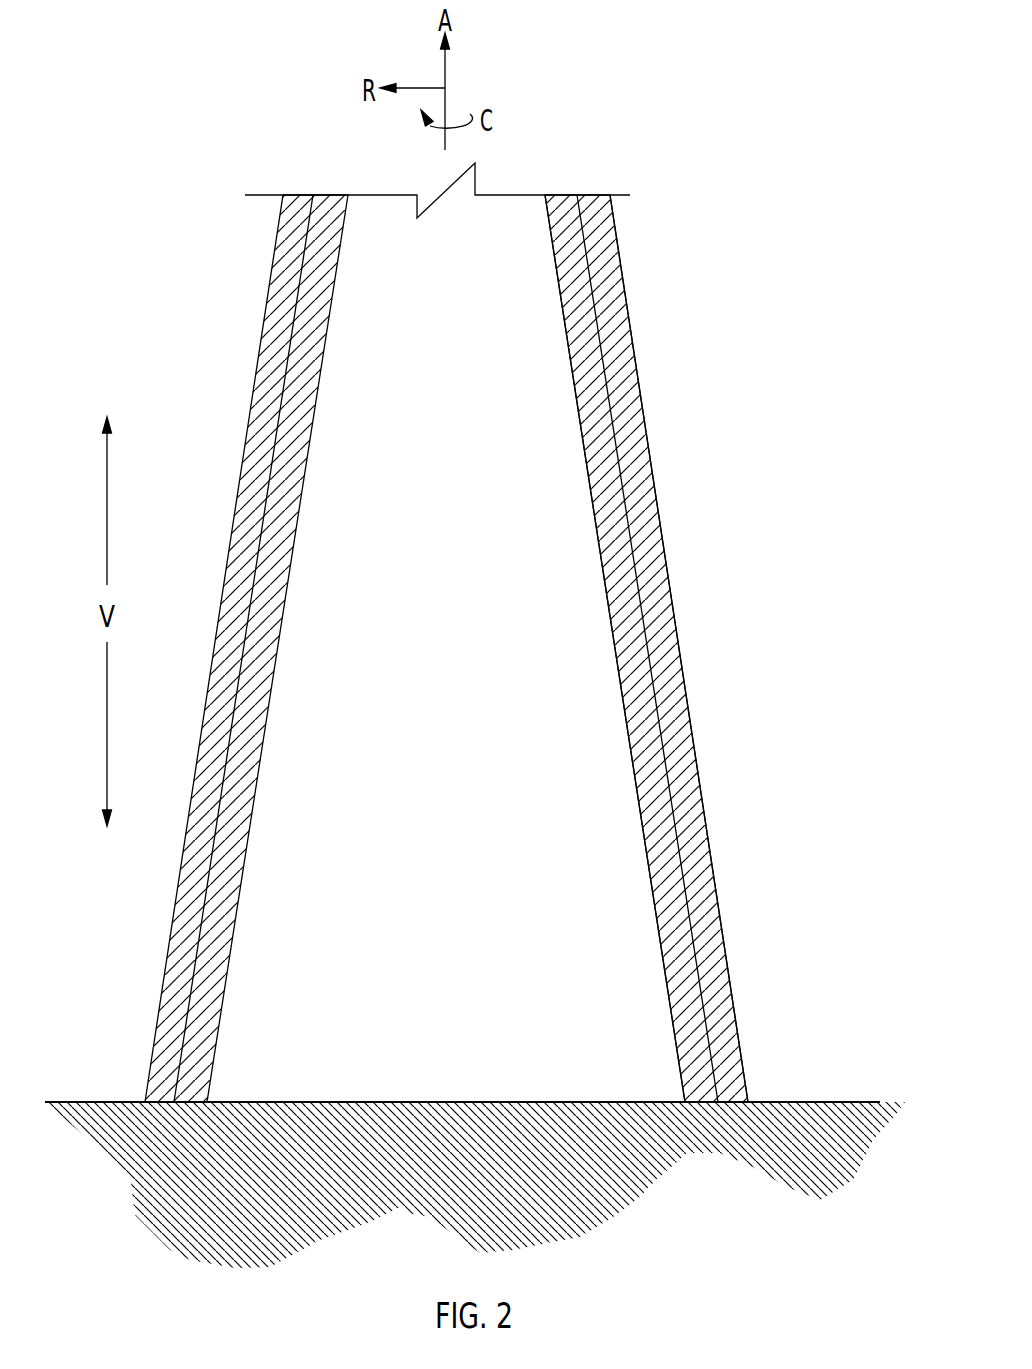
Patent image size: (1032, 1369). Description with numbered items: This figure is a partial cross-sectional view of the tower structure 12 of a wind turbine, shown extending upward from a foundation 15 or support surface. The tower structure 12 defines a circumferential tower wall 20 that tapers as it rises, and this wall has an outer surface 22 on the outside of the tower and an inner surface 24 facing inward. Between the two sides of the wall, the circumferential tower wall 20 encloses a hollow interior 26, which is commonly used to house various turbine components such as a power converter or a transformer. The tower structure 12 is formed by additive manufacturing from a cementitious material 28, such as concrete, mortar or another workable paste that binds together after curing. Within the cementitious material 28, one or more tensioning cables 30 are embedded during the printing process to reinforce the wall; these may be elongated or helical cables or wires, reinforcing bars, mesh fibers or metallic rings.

The tower structure 12 is at (680, 304).
The foundation 15 is at (474, 1169).
The circumferential tower wall 20 is at (670, 555).
The outer surface 22 is at (725, 927).
The inner surface 24 is at (657, 950).
The hollow interior 26 is at (473, 949).
The cementitious material 28 is at (218, 913).
The tensioning cables 30 is at (663, 723).